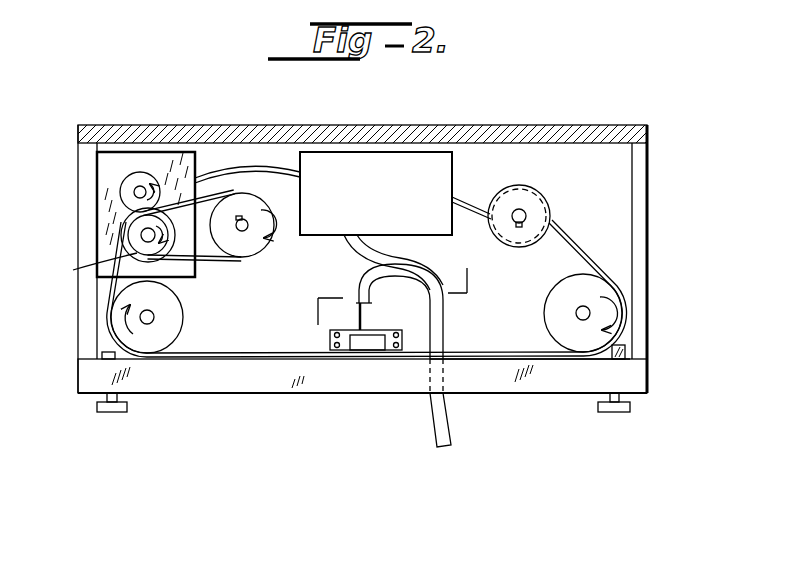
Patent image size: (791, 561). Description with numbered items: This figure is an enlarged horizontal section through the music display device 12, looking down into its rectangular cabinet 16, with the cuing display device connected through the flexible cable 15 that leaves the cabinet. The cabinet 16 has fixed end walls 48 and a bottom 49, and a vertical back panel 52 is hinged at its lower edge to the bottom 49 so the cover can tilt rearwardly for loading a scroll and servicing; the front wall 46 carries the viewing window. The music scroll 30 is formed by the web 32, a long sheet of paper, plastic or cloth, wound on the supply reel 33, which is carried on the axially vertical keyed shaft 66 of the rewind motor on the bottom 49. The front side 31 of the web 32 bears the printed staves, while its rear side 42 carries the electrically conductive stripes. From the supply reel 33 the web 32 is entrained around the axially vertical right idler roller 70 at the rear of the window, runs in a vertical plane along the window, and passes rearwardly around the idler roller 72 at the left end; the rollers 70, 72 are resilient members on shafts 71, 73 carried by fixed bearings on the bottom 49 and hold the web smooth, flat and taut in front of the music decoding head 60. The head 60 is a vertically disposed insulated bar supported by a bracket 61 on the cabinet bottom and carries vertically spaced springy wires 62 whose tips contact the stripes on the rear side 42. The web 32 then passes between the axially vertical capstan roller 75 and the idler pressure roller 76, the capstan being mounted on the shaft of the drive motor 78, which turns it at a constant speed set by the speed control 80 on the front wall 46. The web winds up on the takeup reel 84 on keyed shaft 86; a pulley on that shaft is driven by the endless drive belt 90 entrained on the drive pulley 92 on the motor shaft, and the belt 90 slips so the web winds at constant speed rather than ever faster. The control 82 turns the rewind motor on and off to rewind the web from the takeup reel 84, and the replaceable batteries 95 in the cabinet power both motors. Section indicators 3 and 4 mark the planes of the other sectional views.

The section line 3- 3 is at (467, 87).
The section line 4- 4 is at (64, 284).
The music display device 12 is at (289, 120).
The flexible cable 15 is at (433, 428).
The rectangular cabinet 16 is at (93, 228).
The music scroll 30 is at (517, 185).
The front side 31 is at (578, 246).
The web 32 is at (497, 360).
The supply reel 33 is at (505, 200).
The rear side 42 is at (222, 350).
The front wall 46 is at (253, 382).
The end walls 48 is at (91, 200).
The bottom 49 is at (618, 168).
The back panel 52 is at (221, 134).
The music decoding head 60 is at (390, 345).
The bracket 61 is at (347, 342).
The springy wires 62 is at (378, 345).
The keyed shaft 66 is at (526, 212).
The right idler roller 70 is at (588, 337).
The shaft 71 is at (577, 320).
The idler roller 72 is at (162, 342).
The shaft 73 is at (155, 315).
The capstan roller 75 is at (141, 235).
The idler pressure roller 76 is at (135, 188).
The drive motor 78 is at (158, 160).
The speed control 80 is at (110, 413).
The control 82 is at (622, 410).
The takeup reel 84 is at (242, 248).
The keyed shaft 86 is at (249, 231).
The drive belt 90 is at (211, 258).
The drive pulley 92 is at (93, 267).
The batteries 95 is at (353, 165).